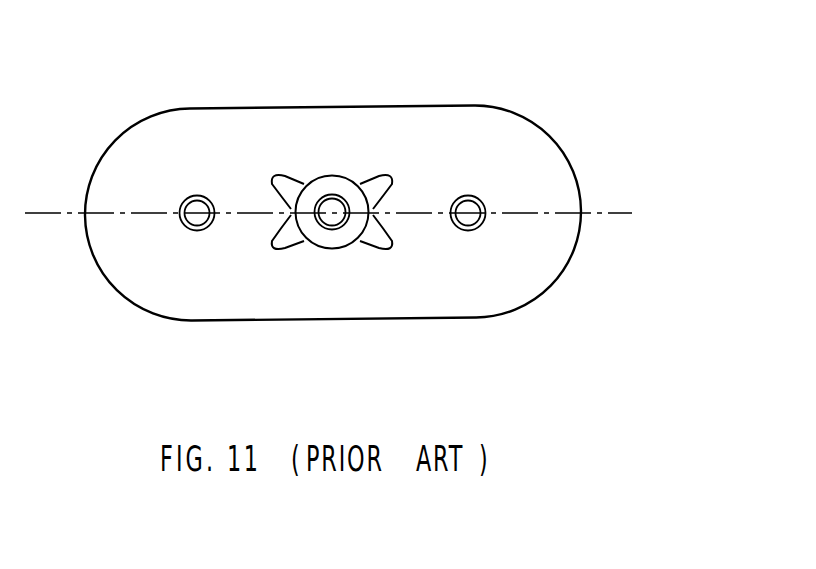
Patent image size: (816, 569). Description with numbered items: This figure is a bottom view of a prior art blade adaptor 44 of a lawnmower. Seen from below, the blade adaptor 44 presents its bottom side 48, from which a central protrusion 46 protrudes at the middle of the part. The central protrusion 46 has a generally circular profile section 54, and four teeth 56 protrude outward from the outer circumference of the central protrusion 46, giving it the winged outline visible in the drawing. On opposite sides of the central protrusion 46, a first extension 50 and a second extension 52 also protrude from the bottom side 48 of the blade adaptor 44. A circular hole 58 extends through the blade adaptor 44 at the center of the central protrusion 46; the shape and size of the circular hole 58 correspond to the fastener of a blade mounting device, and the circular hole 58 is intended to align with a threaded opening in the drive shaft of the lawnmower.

The blade adaptor 44 is at (572, 134).
The central protrusion 46 is at (355, 175).
The bottom side 48 is at (440, 130).
The first extension 50 is at (197, 231).
The second extension 52 is at (468, 231).
The circular profile section 54 is at (325, 172).
The teeth 56 is at (283, 175).
The circular hole 58 is at (330, 230).